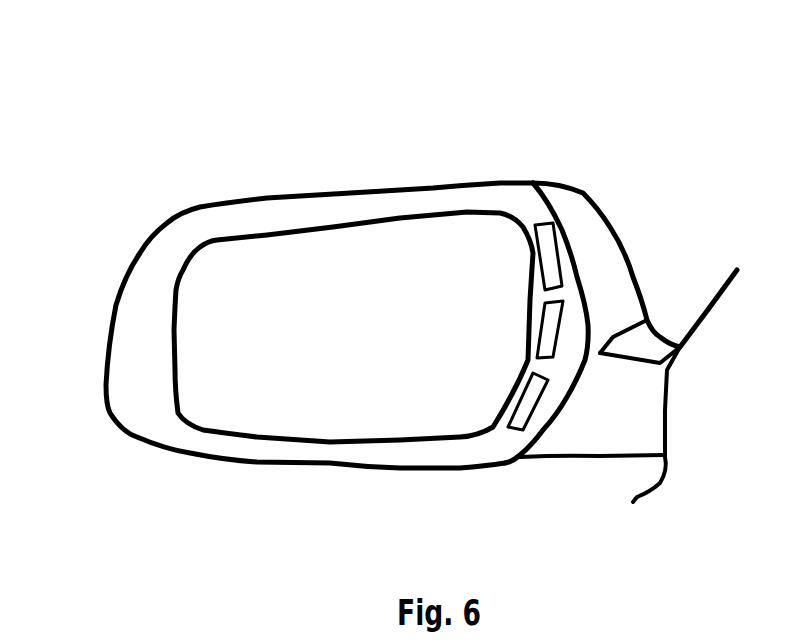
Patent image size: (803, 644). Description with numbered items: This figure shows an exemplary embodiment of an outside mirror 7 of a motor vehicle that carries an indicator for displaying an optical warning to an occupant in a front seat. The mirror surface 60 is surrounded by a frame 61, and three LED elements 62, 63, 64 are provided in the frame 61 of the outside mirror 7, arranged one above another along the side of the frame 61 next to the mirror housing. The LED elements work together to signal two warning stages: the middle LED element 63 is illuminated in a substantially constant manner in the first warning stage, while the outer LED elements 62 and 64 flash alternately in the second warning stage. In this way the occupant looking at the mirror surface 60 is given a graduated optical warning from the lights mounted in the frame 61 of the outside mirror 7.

The outside mirror 7 is at (597, 120).
The mirror surface 60 is at (238, 263).
The frame 61 is at (155, 268).
The LED element 62 is at (557, 253).
The LED element 63 is at (557, 323).
The LED element 64 is at (513, 432).